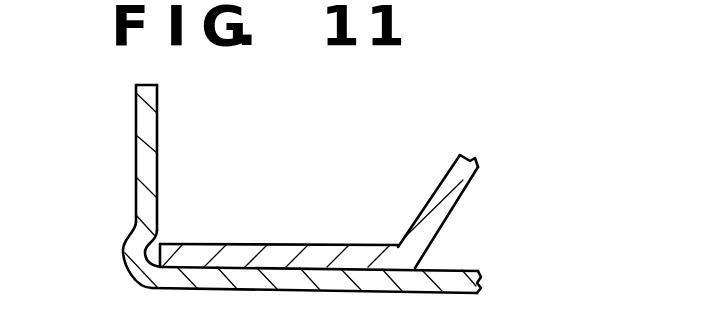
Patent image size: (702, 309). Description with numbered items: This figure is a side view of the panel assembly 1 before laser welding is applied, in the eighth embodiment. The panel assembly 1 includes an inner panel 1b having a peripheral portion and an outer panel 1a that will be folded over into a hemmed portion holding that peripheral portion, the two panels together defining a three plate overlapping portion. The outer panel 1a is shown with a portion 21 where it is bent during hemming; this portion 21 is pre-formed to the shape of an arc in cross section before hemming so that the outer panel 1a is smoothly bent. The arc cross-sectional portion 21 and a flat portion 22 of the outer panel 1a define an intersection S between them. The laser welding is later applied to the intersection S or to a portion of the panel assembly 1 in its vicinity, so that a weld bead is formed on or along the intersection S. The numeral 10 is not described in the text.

The panel assembly 1 is at (389, 215).
The outer panel 1a is at (445, 275).
The inner panel 1b is at (458, 181).
The panel 10 is at (141, 131).
The arc cross-sectional portion 21 is at (130, 266).
The flat portion 22 is at (137, 105).
The intersection S is at (137, 226).